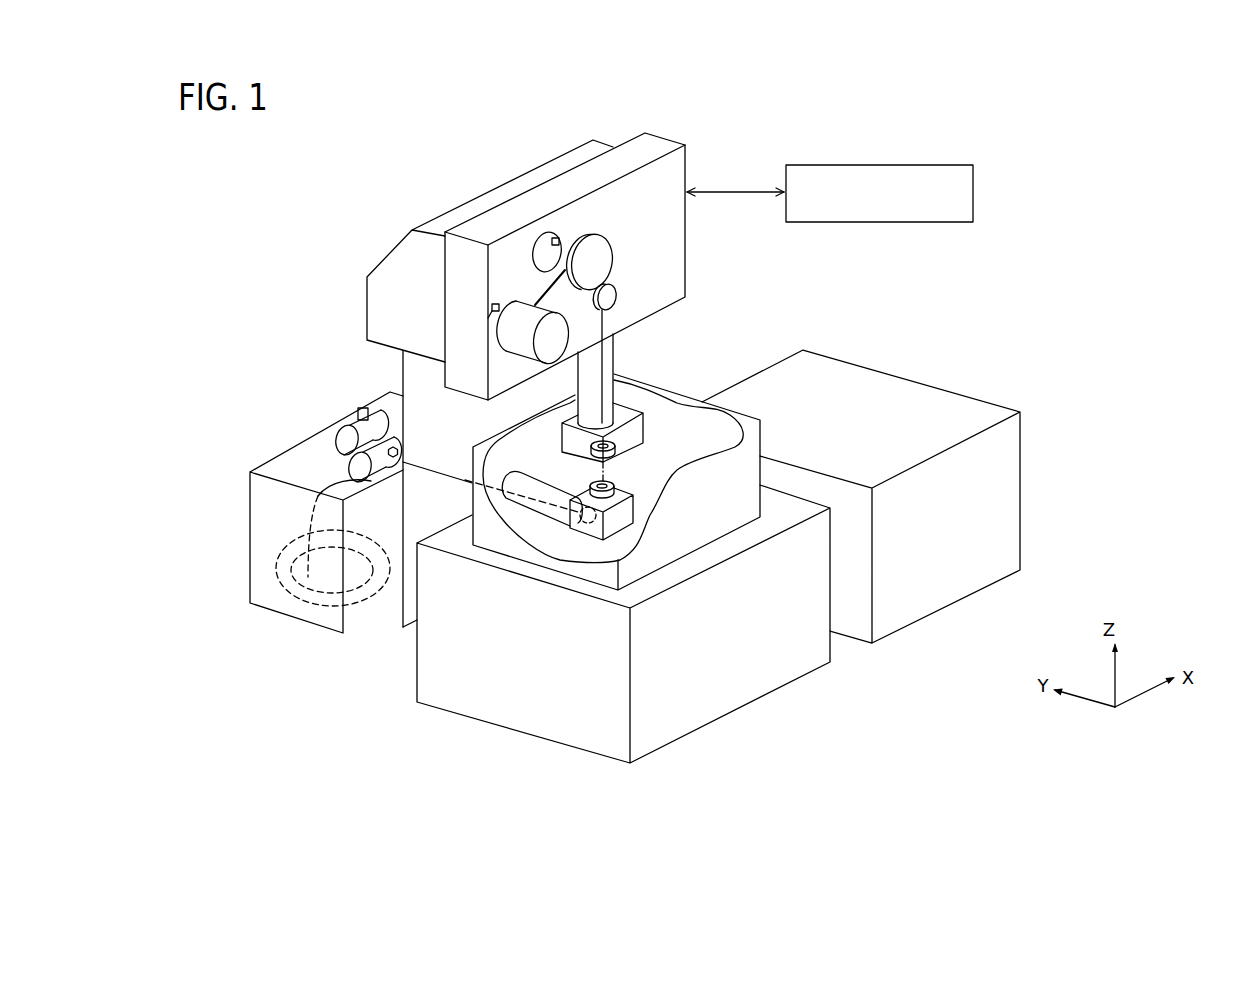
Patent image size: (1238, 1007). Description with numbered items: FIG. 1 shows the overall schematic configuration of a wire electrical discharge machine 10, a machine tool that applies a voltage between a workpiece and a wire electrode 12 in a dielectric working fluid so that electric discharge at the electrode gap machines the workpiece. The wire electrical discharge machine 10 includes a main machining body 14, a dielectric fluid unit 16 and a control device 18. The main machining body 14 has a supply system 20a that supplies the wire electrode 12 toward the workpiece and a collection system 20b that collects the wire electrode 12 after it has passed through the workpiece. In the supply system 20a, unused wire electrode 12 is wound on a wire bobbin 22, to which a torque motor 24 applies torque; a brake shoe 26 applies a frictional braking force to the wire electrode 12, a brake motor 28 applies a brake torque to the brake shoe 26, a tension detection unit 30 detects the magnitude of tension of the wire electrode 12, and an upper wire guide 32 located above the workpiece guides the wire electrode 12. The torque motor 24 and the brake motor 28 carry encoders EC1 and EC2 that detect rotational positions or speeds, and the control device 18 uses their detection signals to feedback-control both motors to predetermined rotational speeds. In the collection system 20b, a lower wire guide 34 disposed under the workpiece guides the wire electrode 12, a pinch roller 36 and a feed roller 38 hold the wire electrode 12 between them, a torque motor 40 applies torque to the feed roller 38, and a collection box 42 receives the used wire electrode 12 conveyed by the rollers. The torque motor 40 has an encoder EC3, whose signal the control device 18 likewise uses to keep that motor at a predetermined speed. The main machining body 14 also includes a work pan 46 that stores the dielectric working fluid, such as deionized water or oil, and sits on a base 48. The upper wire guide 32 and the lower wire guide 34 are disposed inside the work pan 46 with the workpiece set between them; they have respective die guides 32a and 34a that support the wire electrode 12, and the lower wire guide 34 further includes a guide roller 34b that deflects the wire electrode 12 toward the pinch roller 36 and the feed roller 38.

The wire electrical discharge machine 10 is at (215, 197).
The wire electrode 12 is at (605, 323).
The main machining body 14 is at (360, 261).
The dielectric fluid unit 16 is at (1007, 477).
The control device 18 is at (907, 164).
The supply system 20a is at (630, 245).
The collection system 20b is at (294, 428).
The wire bobbin 22 is at (520, 310).
The torque motor 24 is at (487, 323).
The brake shoe 26 is at (593, 250).
The brake motor 28 is at (548, 248).
The tension detection unit 30 is at (617, 297).
The upper wire guide 32 is at (618, 418).
The die guide 32a is at (617, 447).
The lower wire guide 34 is at (623, 515).
The die guide 34a is at (608, 488).
The guide roller 34b is at (585, 527).
The pinch roller 36 is at (368, 412).
The feed roller 38 is at (378, 485).
The torque motor 40 is at (398, 445).
The collection box 42 is at (262, 517).
The work pan 46 is at (728, 417).
The base 48 is at (758, 683).
The encoder EC1 is at (490, 307).
The encoder EC2 is at (554, 238).
The encoder EC3 is at (404, 450).